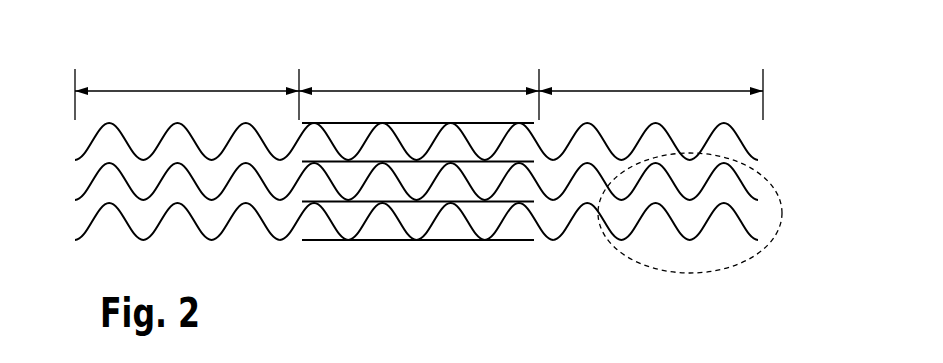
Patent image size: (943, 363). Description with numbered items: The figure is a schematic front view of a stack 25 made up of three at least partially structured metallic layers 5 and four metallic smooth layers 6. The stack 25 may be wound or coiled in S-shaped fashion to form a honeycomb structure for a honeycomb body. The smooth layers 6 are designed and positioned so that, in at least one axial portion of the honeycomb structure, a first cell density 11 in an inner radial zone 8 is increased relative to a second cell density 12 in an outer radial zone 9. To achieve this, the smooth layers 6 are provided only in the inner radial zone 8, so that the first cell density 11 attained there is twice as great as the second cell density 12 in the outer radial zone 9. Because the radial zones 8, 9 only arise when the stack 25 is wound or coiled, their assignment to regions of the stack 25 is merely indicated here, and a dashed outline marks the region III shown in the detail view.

The stack 25 is at (733, 42).
The at least partially structured metallic layer 5 is at (267, 227).
The first cell density 11 is at (382, 223).
The smooth layer 6 is at (460, 240).
The second cell density 12 is at (585, 188).
The outer radial zone 9 is at (177, 91).
The inner radial zone 8 is at (387, 91).
The detail region III is at (697, 221).